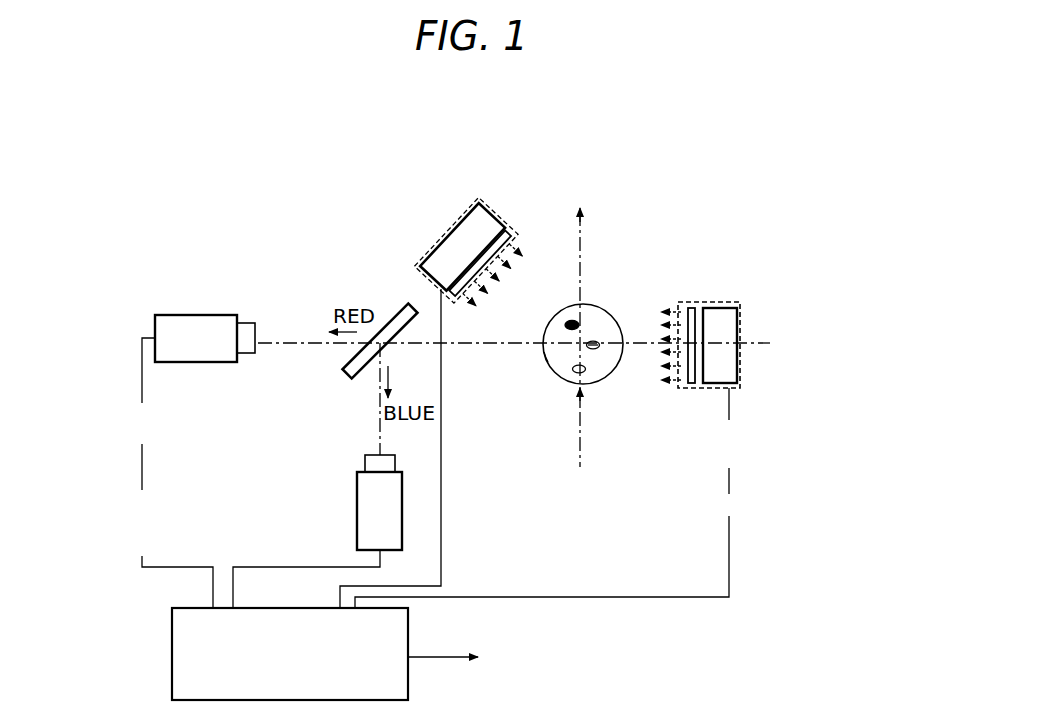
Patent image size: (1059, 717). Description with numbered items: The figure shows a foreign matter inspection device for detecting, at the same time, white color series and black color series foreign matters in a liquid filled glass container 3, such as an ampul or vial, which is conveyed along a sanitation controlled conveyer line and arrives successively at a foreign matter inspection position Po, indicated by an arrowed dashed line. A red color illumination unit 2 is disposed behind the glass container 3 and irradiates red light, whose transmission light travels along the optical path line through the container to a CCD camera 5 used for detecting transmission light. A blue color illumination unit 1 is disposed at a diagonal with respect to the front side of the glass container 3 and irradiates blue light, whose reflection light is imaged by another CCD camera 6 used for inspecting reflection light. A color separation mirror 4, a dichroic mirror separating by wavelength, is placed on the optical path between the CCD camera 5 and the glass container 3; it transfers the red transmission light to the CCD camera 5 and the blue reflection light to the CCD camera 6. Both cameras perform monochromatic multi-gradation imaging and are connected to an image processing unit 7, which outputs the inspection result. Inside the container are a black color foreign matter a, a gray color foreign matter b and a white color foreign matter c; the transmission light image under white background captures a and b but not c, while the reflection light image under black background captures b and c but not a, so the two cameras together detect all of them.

The blue color illumination unit 1 is at (478, 203).
The red color illumination unit 2 is at (737, 302).
The glass container 3 is at (616, 370).
The color separation mirror 4 is at (343, 371).
The CCD camera 5 is at (175, 325).
The CCD camera 6 is at (357, 478).
The image processing unit 7 is at (172, 663).
The black color foreign matter a is at (572, 321).
The gray color foreign matter b is at (598, 341).
The white color foreign matter c is at (584, 386).
The foreign matter inspection position Po is at (532, 372).